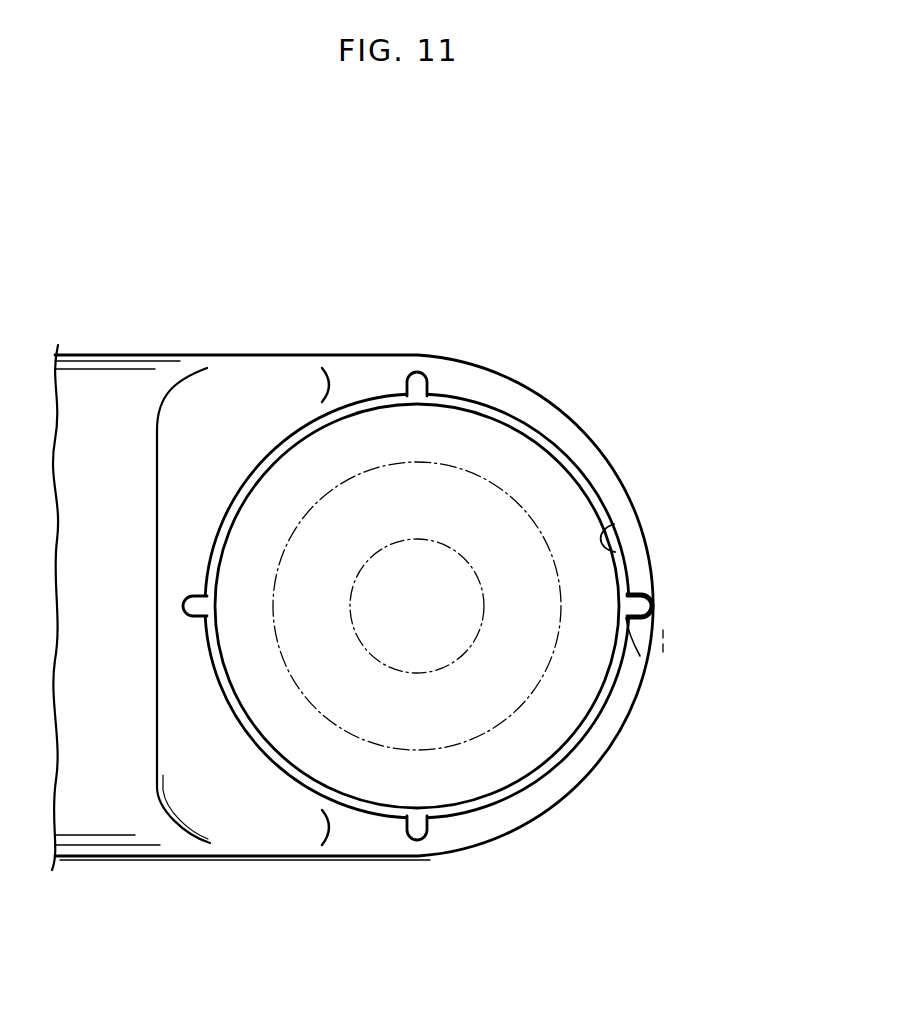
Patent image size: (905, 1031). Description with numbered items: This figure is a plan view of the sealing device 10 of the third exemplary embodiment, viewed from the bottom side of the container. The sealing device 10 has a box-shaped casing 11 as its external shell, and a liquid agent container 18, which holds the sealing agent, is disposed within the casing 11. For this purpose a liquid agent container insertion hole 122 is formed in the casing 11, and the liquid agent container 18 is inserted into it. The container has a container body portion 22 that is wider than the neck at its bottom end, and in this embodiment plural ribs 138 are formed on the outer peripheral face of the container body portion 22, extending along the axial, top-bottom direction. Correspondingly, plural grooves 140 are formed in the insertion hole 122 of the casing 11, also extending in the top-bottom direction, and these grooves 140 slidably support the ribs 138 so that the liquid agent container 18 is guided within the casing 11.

The sealing device 10 is at (352, 536).
The casing 11 is at (268, 355).
The liquid agent container 18 is at (510, 428).
The container body portion 22 is at (466, 574).
The liquid agent container insertion hole 122 is at (604, 548).
The ribs 138 is at (628, 625).
The grooves 140 is at (652, 615).